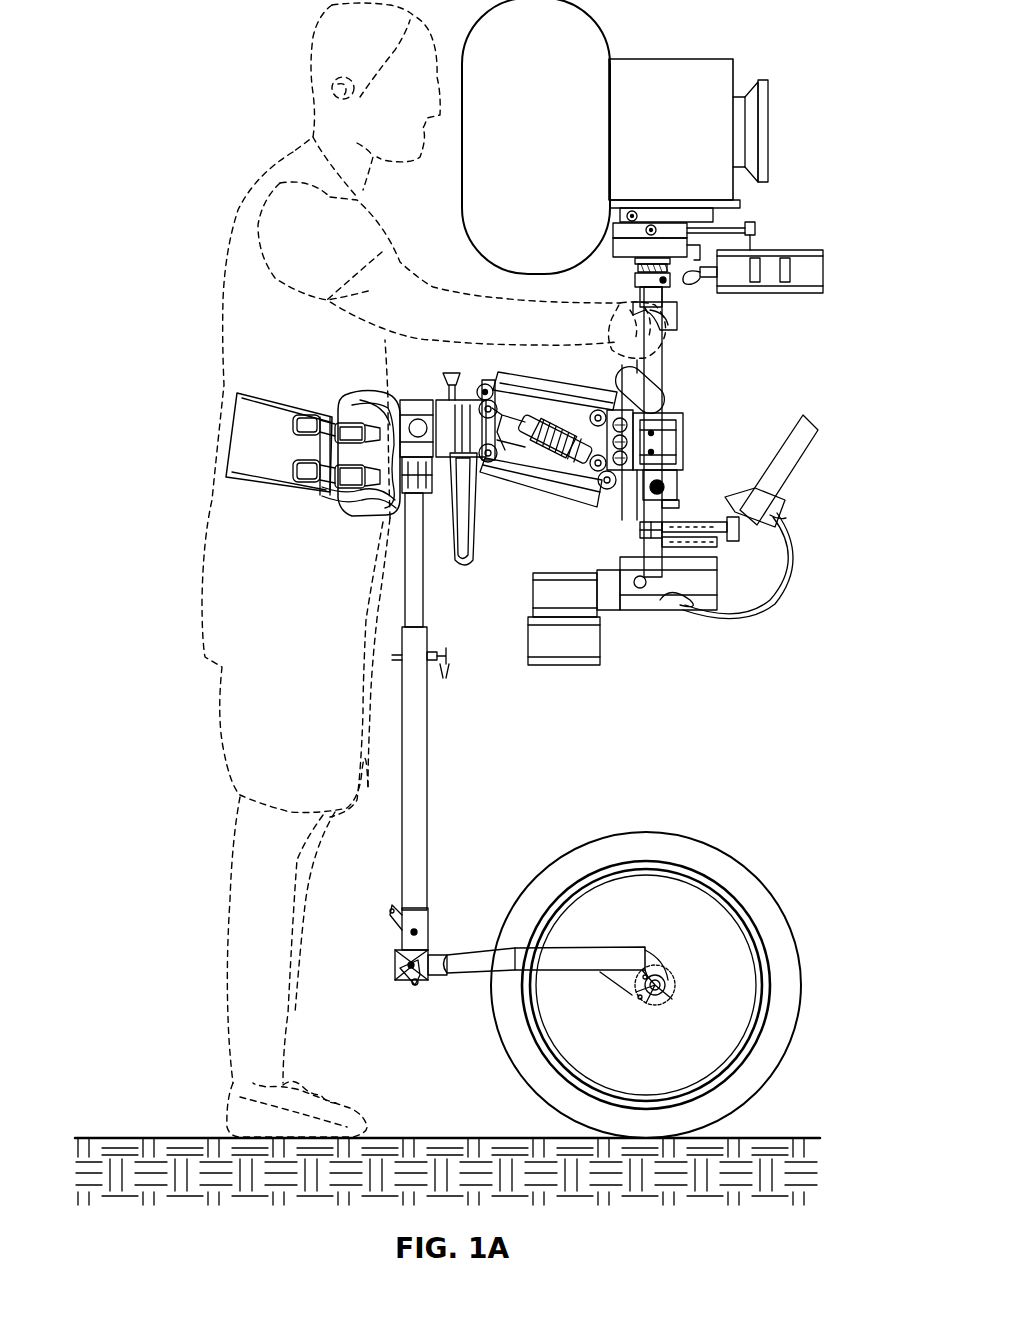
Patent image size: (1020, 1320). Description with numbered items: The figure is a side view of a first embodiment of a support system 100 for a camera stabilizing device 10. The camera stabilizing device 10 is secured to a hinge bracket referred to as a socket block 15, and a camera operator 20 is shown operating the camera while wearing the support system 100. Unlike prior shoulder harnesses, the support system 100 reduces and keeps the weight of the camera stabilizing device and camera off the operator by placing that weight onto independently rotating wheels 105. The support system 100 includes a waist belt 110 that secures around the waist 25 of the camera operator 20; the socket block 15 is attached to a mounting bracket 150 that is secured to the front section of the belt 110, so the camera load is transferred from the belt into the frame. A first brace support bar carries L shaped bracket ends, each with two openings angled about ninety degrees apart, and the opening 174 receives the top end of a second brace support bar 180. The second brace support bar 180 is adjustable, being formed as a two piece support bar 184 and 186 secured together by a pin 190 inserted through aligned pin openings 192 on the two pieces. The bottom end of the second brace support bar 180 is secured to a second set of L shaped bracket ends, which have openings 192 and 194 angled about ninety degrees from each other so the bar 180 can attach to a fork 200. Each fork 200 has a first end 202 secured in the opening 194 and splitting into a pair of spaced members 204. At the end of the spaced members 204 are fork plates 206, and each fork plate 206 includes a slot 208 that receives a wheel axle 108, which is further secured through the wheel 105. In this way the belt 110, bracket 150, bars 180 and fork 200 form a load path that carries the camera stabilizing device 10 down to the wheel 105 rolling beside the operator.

The camera stabilizing device 10 is at (683, 412).
The socket block 15 is at (440, 483).
The camera operator 20 is at (235, 300).
The waist 25 is at (240, 388).
The support system 100 is at (376, 527).
The wheel 105 is at (644, 985).
The wheel axle 108 is at (660, 990).
The waist belt 110 is at (237, 440).
The mounting bracket 150 is at (403, 425).
The opening 174 is at (262, 490).
The second brace support bar 180 is at (458, 701).
The two piece support bar 184 is at (418, 603).
The two piece support bar 186 is at (421, 874).
The pin 190 is at (443, 668).
The pin opening 192 is at (404, 910).
The opening 194 is at (415, 983).
The fork 200 is at (517, 986).
The first end 202 is at (440, 952).
The spaced member 204 is at (535, 960).
The fork plate 206 is at (655, 966).
The slot 208 is at (672, 985).